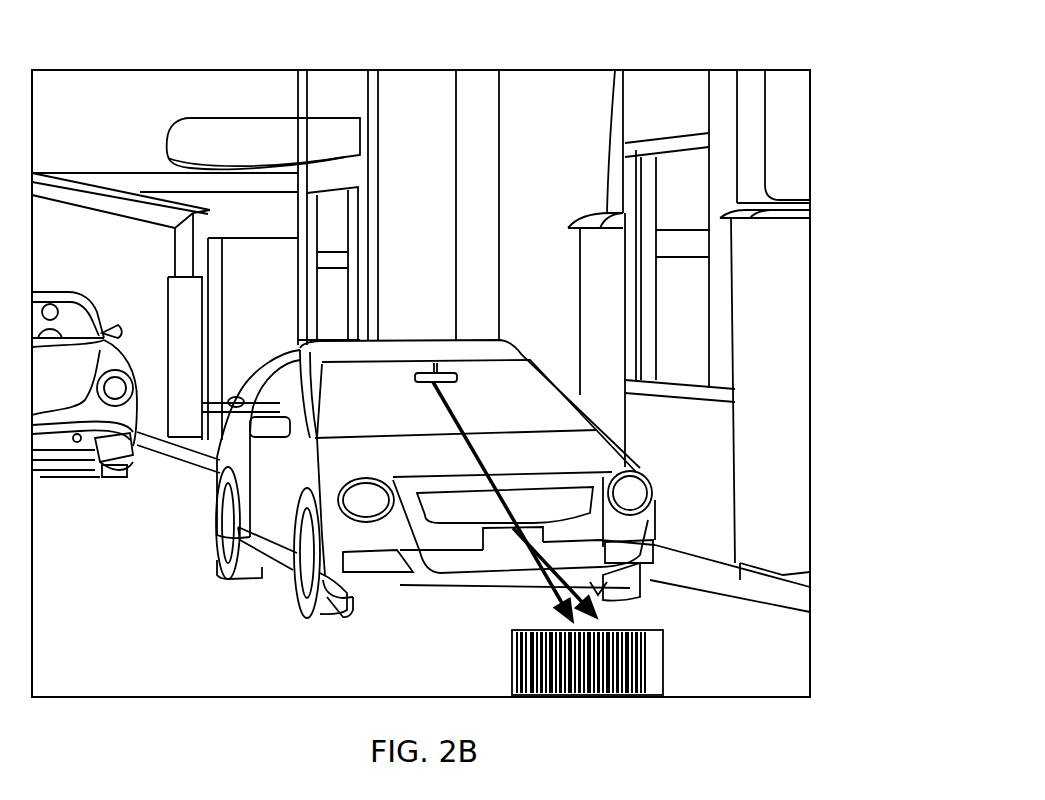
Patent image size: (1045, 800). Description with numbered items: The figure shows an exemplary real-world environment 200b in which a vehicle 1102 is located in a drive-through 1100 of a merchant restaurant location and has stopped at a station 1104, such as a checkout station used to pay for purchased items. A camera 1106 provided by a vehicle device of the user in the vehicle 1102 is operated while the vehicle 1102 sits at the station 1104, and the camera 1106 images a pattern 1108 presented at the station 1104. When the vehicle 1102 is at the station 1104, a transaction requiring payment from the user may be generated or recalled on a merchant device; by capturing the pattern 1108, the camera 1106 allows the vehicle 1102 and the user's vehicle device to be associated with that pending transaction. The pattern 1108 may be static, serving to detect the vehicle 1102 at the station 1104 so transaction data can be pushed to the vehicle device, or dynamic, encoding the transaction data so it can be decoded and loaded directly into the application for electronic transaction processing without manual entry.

The environment 200b is at (843, 55).
The drive-through 1100 is at (421, 326).
The vehicle 1102 is at (656, 495).
The station 1104 is at (713, 334).
The camera 1106 is at (425, 385).
The pattern 1108 is at (667, 658).